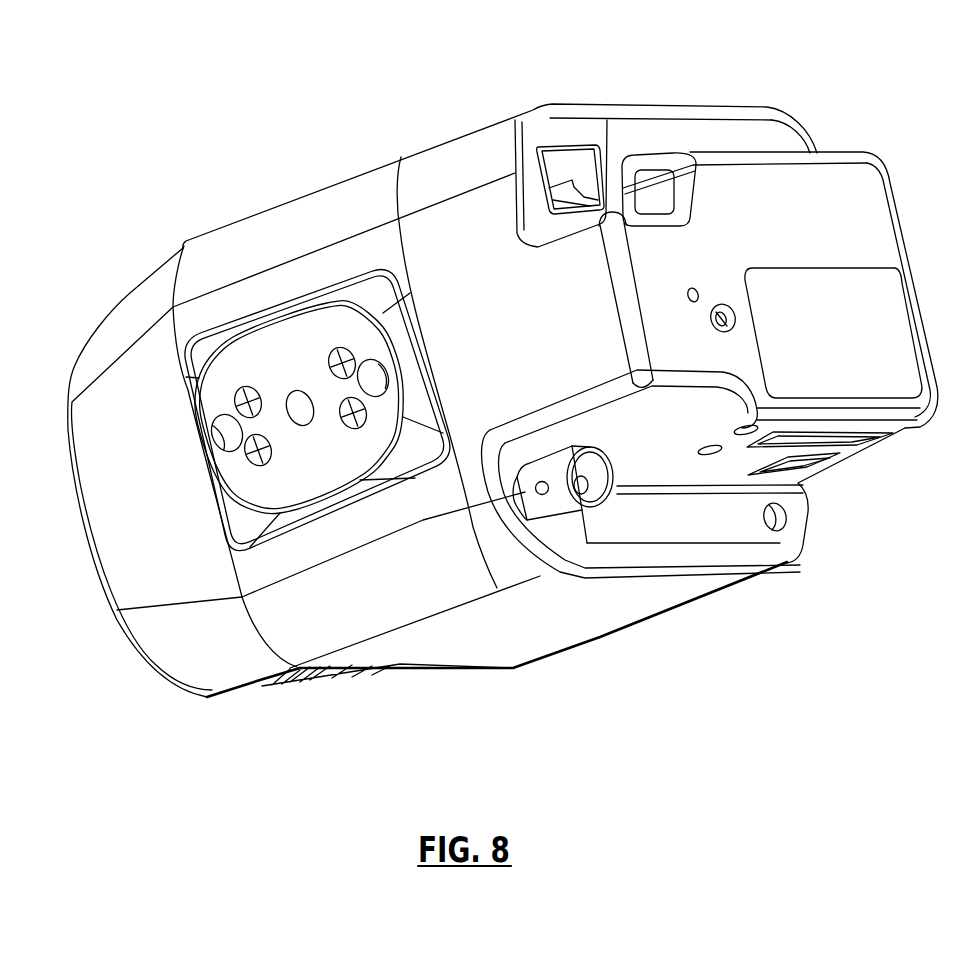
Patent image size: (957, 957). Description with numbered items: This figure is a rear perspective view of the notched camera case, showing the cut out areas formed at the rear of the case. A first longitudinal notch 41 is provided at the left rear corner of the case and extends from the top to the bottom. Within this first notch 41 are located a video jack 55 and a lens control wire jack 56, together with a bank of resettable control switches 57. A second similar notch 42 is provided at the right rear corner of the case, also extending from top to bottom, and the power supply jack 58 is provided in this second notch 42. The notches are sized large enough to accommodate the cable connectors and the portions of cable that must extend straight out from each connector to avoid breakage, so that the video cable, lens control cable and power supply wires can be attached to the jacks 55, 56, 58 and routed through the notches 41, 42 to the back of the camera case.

The first longitudinal notch 41 is at (717, 520).
The second notch 42 is at (705, 137).
The video jack 55 is at (567, 513).
The lens control wire jack 56 is at (815, 473).
The bank of resettable control switches 57 is at (887, 445).
The power supply jack 58 is at (582, 172).